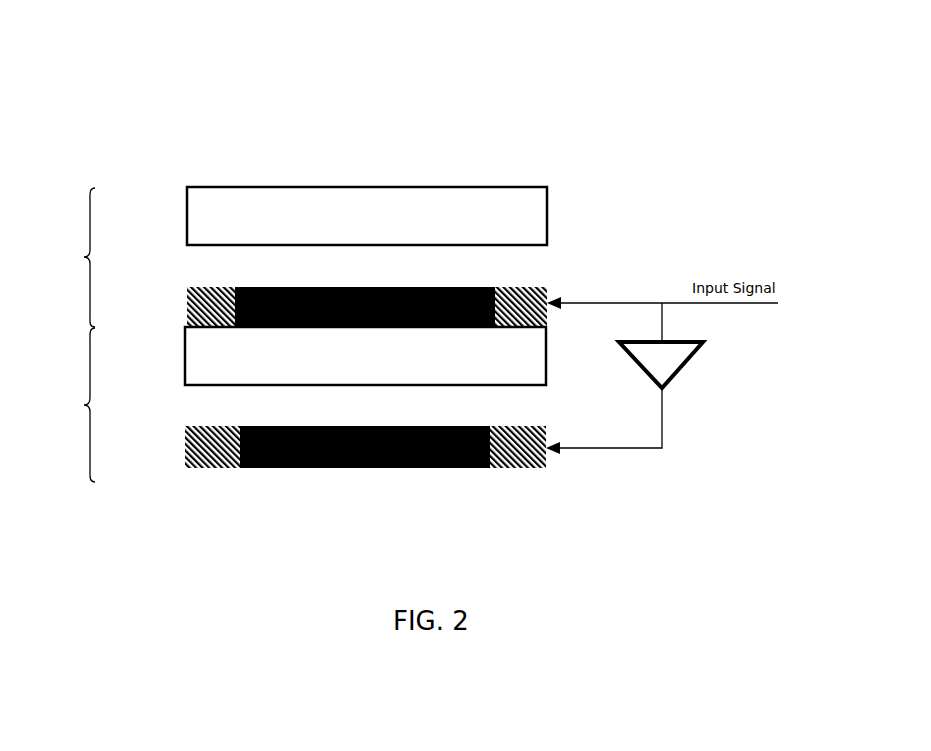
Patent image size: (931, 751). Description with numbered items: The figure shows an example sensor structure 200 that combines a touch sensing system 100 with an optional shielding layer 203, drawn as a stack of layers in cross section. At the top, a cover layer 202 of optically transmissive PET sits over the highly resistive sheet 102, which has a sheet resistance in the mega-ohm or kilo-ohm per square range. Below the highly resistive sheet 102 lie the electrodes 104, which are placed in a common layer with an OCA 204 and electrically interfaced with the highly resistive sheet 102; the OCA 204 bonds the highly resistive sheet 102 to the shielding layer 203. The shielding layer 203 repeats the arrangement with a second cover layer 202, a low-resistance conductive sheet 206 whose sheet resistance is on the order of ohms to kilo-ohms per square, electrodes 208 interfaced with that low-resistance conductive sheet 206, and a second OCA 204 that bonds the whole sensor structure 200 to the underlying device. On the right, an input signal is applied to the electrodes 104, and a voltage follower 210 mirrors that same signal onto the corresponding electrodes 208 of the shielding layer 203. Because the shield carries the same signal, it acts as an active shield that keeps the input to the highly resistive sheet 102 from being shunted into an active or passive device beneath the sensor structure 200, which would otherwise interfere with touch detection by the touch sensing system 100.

The touch sensing system 100 is at (70, 257).
The highly resistive sheet 102 is at (184, 267).
The electrodes 104 is at (185, 303).
The sensor structure 200 is at (576, 87).
The cover layer 202 is at (403, 186).
The shielding layer 203 is at (70, 405).
The OCA 204 is at (488, 327).
The low-resistance conductive sheet 206 is at (185, 410).
The electrodes 208 is at (185, 458).
The voltage follower 210 is at (668, 378).